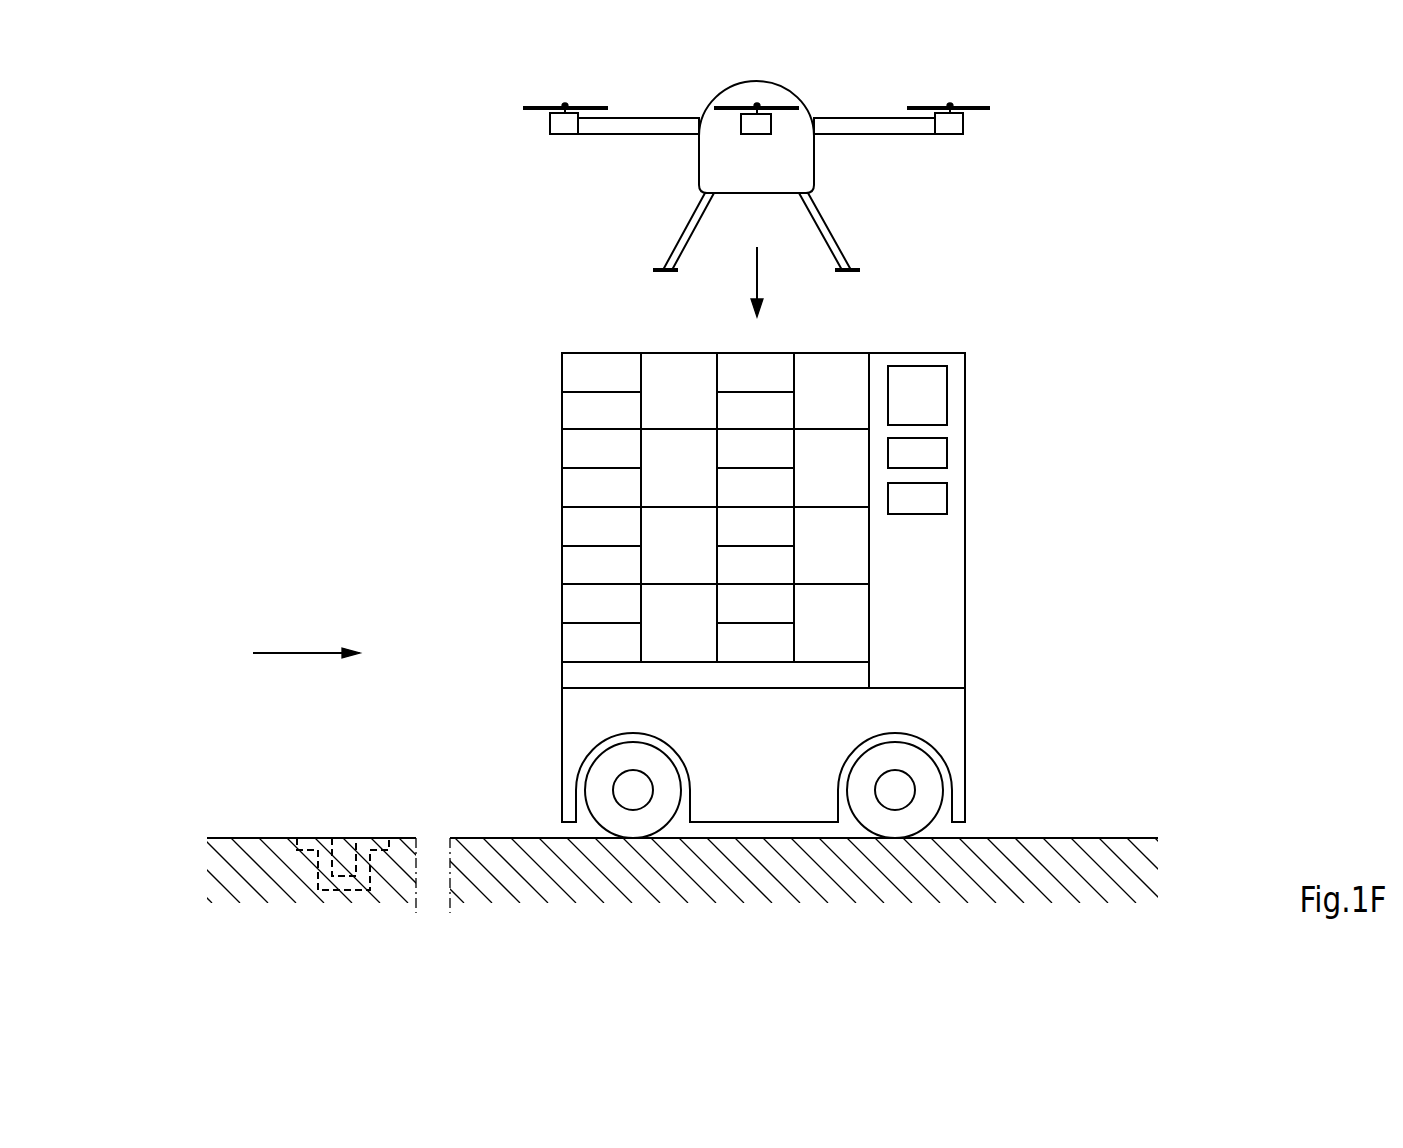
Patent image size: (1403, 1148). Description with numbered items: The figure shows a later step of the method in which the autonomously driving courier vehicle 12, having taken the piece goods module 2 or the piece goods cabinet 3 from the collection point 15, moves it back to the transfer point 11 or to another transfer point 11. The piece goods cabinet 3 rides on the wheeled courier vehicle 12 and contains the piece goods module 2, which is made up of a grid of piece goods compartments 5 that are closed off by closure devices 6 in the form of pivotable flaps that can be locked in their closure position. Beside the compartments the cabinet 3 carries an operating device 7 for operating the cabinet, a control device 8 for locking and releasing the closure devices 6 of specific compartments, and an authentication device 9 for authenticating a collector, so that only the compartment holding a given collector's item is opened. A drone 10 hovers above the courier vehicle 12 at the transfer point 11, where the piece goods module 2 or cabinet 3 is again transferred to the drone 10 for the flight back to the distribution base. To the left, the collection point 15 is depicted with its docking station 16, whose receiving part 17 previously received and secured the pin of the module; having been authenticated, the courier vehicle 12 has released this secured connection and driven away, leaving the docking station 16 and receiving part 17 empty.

The piece goods module 2 is at (582, 407).
The piece goods cabinet 3 is at (926, 601).
The piece goods compartments 5 is at (733, 526).
The closure devices 6 is at (678, 506).
The operating device 7 is at (937, 393).
The control device 8 is at (937, 453).
The authentication device 9 is at (933, 498).
The drone 10 is at (722, 160).
The transfer point 11 is at (1029, 838).
The courier vehicle 12 is at (749, 790).
The collection point 15 is at (227, 838).
The docking station 16 is at (312, 850).
The receiving part 17 is at (347, 848).